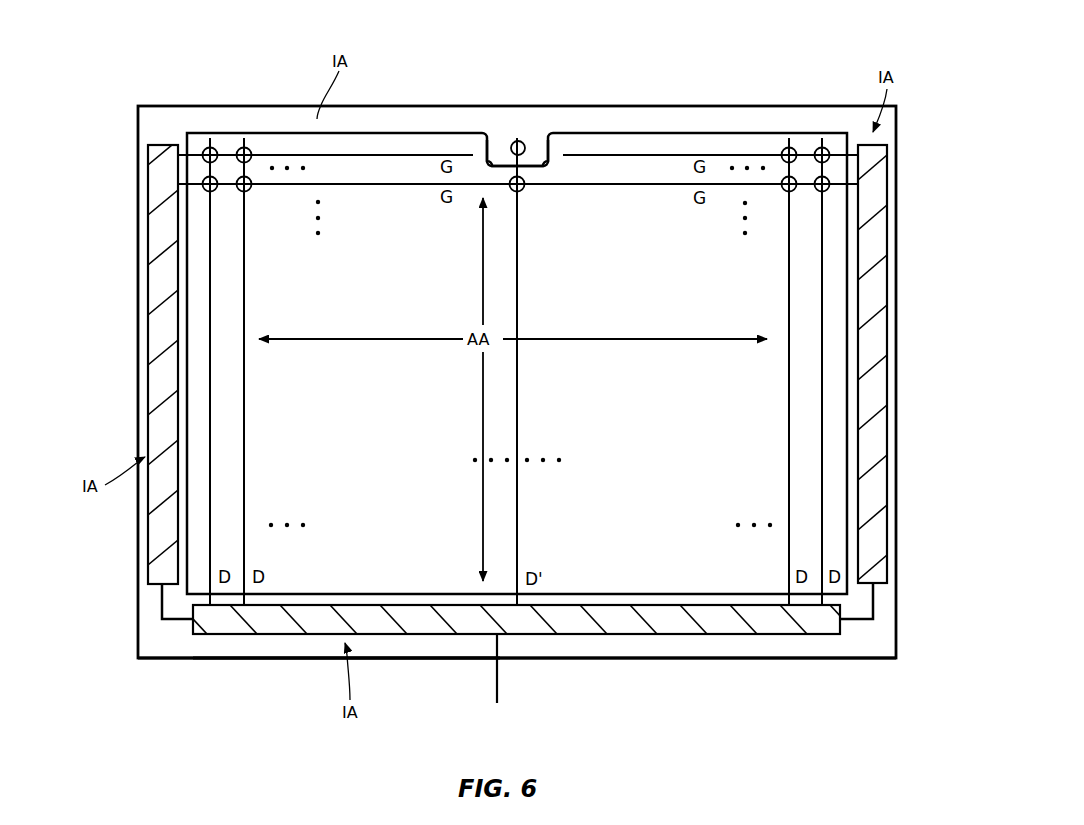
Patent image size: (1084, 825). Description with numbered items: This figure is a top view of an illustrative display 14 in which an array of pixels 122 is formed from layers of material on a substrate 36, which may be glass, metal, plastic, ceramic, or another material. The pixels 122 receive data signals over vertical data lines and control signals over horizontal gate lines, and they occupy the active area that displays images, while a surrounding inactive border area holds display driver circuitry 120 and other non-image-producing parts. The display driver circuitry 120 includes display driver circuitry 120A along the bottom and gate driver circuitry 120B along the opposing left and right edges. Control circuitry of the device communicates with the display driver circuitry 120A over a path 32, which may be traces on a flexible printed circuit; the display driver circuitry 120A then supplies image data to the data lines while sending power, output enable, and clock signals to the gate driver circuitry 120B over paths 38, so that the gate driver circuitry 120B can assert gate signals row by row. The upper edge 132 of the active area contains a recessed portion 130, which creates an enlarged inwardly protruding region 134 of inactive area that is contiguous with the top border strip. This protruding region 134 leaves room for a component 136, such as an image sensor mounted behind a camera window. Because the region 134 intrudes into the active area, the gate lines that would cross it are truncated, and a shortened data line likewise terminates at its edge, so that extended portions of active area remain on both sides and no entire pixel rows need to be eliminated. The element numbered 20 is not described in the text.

The display 14 is at (757, 55).
The display layer 20 is at (276, 643).
The path 32 is at (497, 677).
The substrate 36 is at (240, 661).
The path 38 is at (173, 623).
The display driver circuitry 120 is at (156, 593).
The display driver circuitry 120A is at (687, 635).
The gate driver circuitry 120B is at (862, 148).
The pixels 122 is at (244, 148).
The recessed portion 130 is at (556, 163).
The edge 132 is at (670, 132).
The inwardly protruding region 134 is at (501, 148).
The component 136 is at (519, 140).